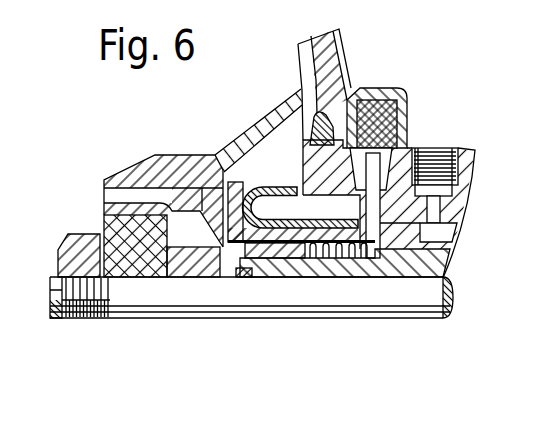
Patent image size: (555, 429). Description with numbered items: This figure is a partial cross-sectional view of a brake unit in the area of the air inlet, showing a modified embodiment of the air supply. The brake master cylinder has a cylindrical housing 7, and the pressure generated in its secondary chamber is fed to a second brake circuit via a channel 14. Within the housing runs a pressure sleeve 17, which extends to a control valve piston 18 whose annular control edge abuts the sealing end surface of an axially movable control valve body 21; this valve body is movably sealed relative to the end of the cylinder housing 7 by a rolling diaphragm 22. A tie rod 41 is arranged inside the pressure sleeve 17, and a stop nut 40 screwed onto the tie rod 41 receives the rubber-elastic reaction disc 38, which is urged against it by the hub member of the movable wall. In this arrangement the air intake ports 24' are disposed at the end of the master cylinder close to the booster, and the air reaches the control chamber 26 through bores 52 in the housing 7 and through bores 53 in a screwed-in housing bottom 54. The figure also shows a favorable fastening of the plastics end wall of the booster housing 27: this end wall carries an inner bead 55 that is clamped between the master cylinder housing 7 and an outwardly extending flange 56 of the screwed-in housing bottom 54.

The cylindrical housing 7 is at (463, 168).
The channel 14 is at (438, 190).
The pressure sleeve 17 is at (420, 268).
The control valve piston 18 is at (193, 265).
The control valve body 21 is at (265, 256).
The rolling diaphragm 22 is at (225, 152).
The air intake ports 24' is at (420, 132).
The control chamber 26 is at (372, 260).
The booster housing 27 is at (336, 46).
The reaction disc 38 is at (110, 206).
The stop nut 40 is at (68, 252).
The tie rod 41 is at (312, 305).
The bores 52 is at (406, 133).
The bores 53 is at (426, 152).
The screwed-in housing bottom 54 is at (393, 130).
The inner bead 55 is at (323, 147).
The flange 56 is at (265, 116).